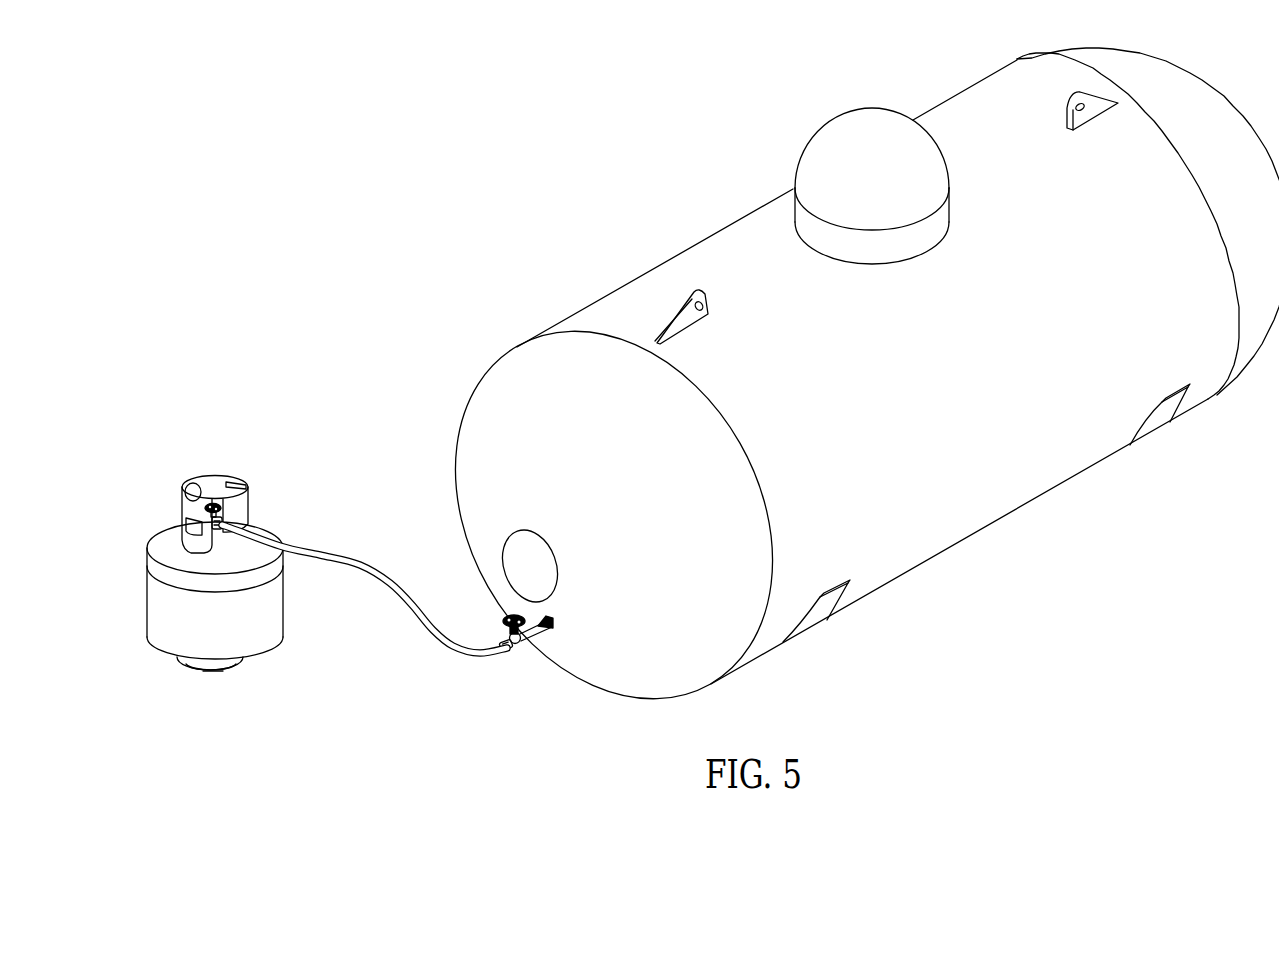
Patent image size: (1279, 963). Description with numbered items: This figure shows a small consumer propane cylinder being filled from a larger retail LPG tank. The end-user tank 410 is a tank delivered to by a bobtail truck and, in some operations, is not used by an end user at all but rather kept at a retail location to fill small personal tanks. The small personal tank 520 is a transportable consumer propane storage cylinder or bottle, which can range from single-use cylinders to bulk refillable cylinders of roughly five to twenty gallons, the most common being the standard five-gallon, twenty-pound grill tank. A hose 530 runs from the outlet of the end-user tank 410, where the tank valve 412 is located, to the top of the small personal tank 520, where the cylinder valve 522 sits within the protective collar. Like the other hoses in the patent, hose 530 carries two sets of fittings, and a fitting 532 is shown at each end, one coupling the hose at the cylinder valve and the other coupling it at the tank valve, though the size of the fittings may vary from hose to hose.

The end-user tank 410 is at (1035, 502).
The tank valve 412 is at (523, 643).
The small personal tank 520 is at (152, 563).
The cylinder valve 522 is at (213, 503).
The hose 530 is at (360, 562).
The fitting 532 is at (227, 521).